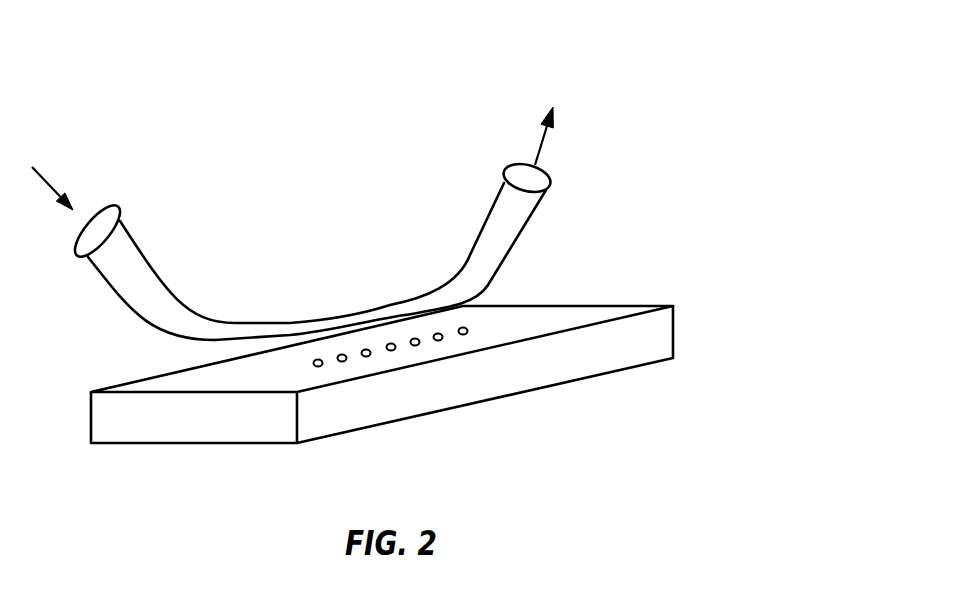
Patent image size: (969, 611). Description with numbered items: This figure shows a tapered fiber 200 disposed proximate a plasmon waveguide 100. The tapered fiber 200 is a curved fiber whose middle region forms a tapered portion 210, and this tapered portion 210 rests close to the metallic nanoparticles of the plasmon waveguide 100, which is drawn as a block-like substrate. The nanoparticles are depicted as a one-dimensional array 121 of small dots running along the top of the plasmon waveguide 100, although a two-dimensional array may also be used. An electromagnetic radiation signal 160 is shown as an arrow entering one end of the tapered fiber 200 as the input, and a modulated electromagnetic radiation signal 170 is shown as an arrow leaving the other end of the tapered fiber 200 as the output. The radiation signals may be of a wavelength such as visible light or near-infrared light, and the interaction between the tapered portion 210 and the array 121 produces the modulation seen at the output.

The plasmon waveguide 100 is at (355, 392).
The one-dimensional array 121 is at (468, 328).
The electromagnetic radiation signal 160 is at (40, 175).
The modulated electromagnetic radiation signal 170 is at (540, 146).
The tapered fiber 200 is at (487, 228).
The tapered portion 210 is at (362, 310).